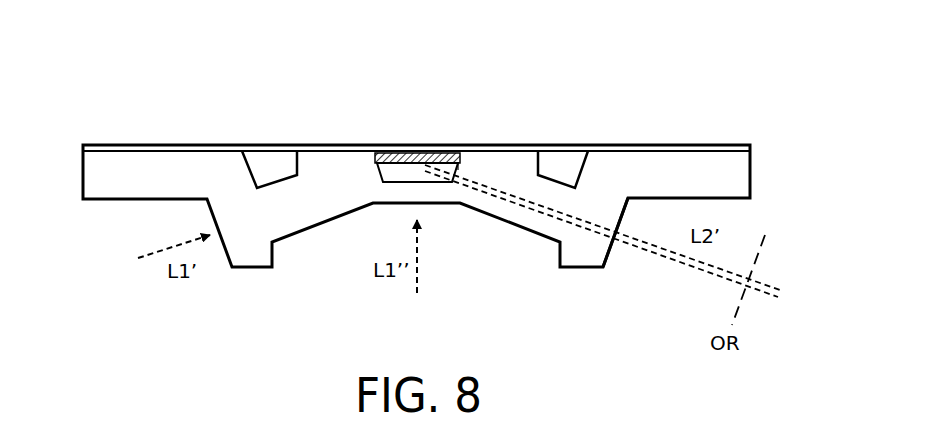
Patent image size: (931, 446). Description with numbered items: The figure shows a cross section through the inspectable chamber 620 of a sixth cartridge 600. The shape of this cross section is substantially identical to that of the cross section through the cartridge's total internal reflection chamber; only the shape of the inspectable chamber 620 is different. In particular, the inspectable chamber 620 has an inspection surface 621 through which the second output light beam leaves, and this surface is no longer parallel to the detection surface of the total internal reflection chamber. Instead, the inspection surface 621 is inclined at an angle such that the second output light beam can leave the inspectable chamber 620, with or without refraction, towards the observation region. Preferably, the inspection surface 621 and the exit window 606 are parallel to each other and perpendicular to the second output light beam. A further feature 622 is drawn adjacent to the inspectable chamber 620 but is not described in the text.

The sixth cartridge 600 is at (611, 118).
The exit window 606 is at (610, 253).
The inspectable chamber 620 is at (395, 178).
The inspection surface 621 is at (455, 166).
The light blocking layer 622 is at (432, 153).